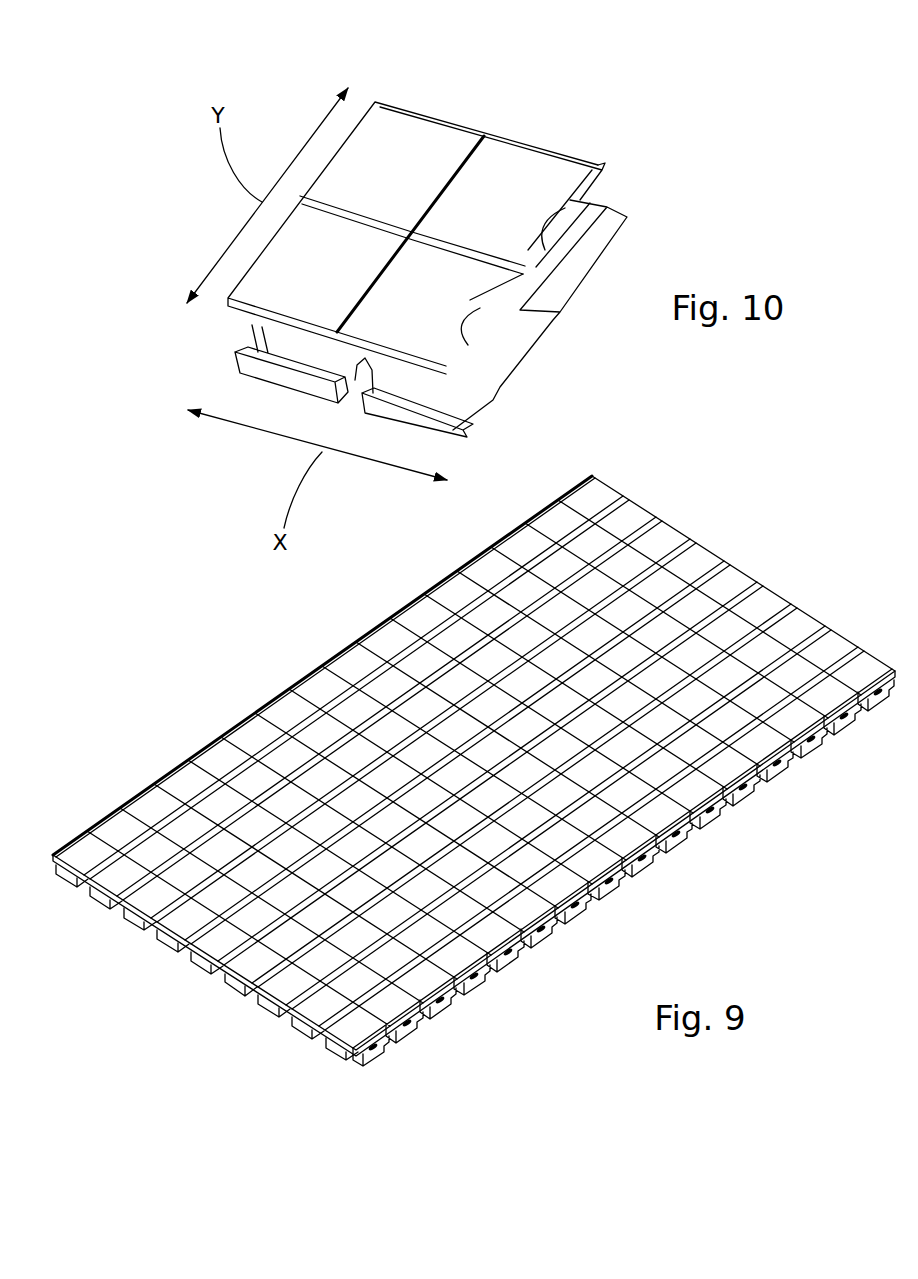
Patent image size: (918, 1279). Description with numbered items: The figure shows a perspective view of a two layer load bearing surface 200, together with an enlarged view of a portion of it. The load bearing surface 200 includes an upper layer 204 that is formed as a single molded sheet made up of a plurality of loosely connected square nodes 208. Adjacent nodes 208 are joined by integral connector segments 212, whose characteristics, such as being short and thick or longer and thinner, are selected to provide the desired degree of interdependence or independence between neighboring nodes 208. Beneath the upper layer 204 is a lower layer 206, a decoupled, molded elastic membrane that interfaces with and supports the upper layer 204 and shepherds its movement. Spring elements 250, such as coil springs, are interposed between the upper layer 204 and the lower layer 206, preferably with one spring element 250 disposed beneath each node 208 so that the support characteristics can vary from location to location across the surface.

In FIG. 10, the load bearing surface 200 is at (607, 87).
In FIG. 9, the load bearing surface 200 is at (165, 602).
In FIG. 10, the upper layer 204 is at (545, 153).
In FIG. 9, the upper layer 204 is at (703, 553).
In FIG. 10, the lower layer 206 is at (613, 222).
In FIG. 9, the lower layer 206 is at (663, 842).
In FIG. 10, the nodes 208 is at (527, 157).
In FIG. 9, the nodes 208 is at (247, 735).
In FIG. 10, the connector segments 212 is at (446, 184).
In FIG. 10, the spring element 250 is at (563, 235).
In FIG. 9, the spring element 250 is at (537, 933).